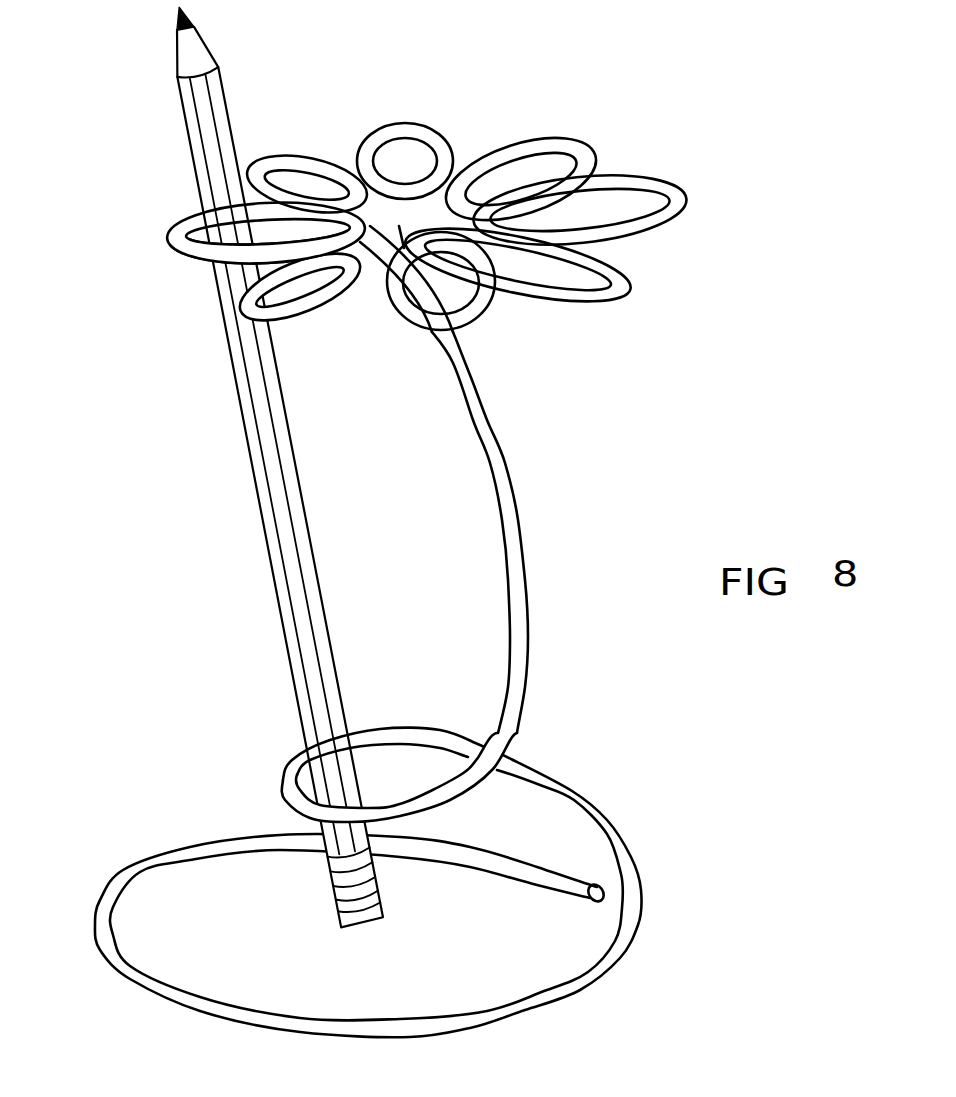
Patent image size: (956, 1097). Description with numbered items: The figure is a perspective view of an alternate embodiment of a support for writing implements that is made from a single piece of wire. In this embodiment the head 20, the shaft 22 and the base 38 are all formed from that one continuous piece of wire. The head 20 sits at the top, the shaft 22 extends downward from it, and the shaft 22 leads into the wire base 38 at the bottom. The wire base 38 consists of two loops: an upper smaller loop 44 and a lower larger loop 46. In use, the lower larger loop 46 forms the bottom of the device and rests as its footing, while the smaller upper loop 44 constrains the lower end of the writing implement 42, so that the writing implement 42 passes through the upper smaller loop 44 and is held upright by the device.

The head 20 is at (645, 242).
The shaft 22 is at (493, 458).
The base 38 is at (371, 889).
The writing implement 42 is at (283, 503).
The upper smaller loop 44 is at (293, 773).
The lower larger loop 46 is at (128, 872).